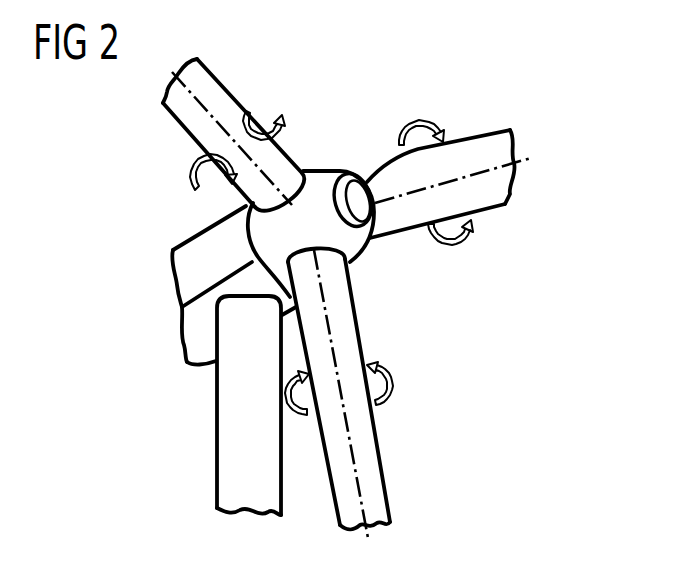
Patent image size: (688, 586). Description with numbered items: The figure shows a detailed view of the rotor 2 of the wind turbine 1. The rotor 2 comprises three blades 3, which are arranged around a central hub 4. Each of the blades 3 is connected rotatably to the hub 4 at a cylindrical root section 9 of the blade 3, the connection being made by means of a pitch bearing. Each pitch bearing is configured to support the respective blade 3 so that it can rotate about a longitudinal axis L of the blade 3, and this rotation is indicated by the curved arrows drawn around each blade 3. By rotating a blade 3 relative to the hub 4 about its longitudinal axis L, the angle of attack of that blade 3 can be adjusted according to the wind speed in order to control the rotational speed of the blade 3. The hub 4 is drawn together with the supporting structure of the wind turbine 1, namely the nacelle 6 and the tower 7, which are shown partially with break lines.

The wind turbine 1 is at (568, 121).
The rotor 2 is at (334, 107).
The blade 3 is at (193, 123).
The hub 4 is at (377, 225).
The nacelle 6 is at (187, 327).
The tower 7 is at (218, 445).
The cylindrical root section 9 is at (301, 172).
The longitudinal axis L is at (206, 108).